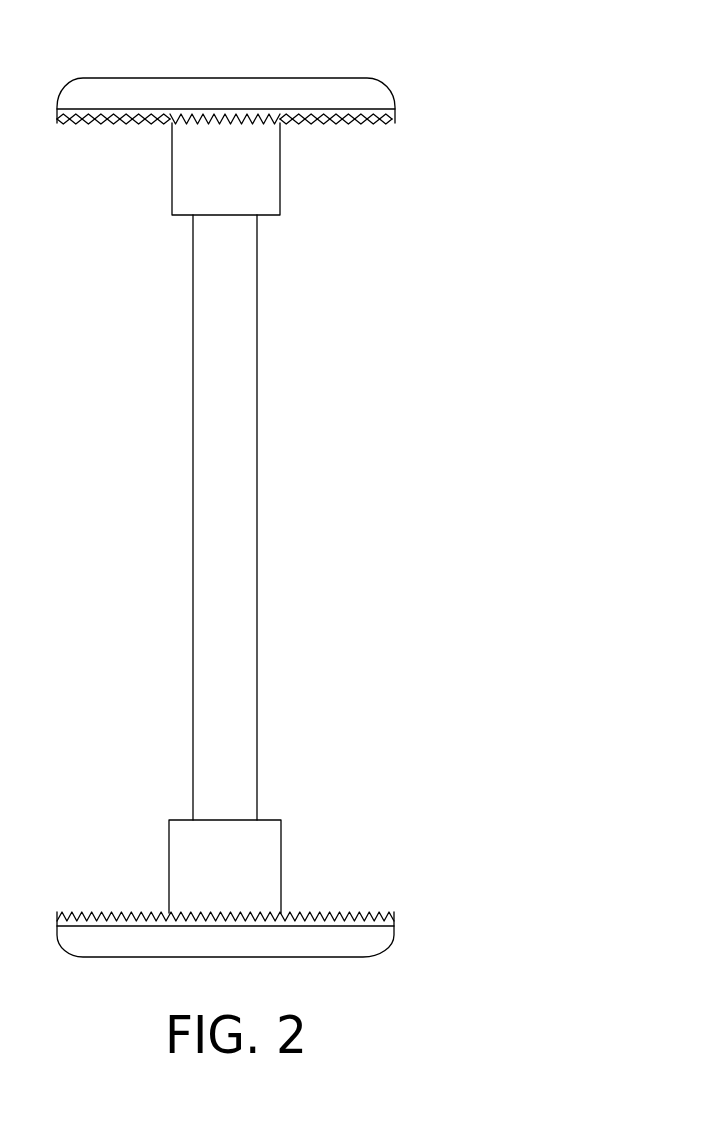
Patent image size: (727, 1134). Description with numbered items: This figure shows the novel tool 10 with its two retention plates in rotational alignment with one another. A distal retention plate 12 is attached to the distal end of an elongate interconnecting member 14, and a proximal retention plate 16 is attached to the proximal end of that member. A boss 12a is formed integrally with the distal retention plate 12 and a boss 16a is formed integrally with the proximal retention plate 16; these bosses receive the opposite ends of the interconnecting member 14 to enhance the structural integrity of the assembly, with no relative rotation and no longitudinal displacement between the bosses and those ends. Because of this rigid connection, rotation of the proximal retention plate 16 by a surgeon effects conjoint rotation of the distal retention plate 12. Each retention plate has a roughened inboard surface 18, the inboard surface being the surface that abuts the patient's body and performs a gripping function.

The tool 10 is at (493, 174).
The distal retention plate 12 is at (142, 90).
The boss 12a is at (187, 175).
The elongate interconnecting member 14 is at (250, 507).
The proximal retention plate 16 is at (377, 940).
The boss 16a is at (180, 862).
The roughened inboard surface 18 is at (340, 123).